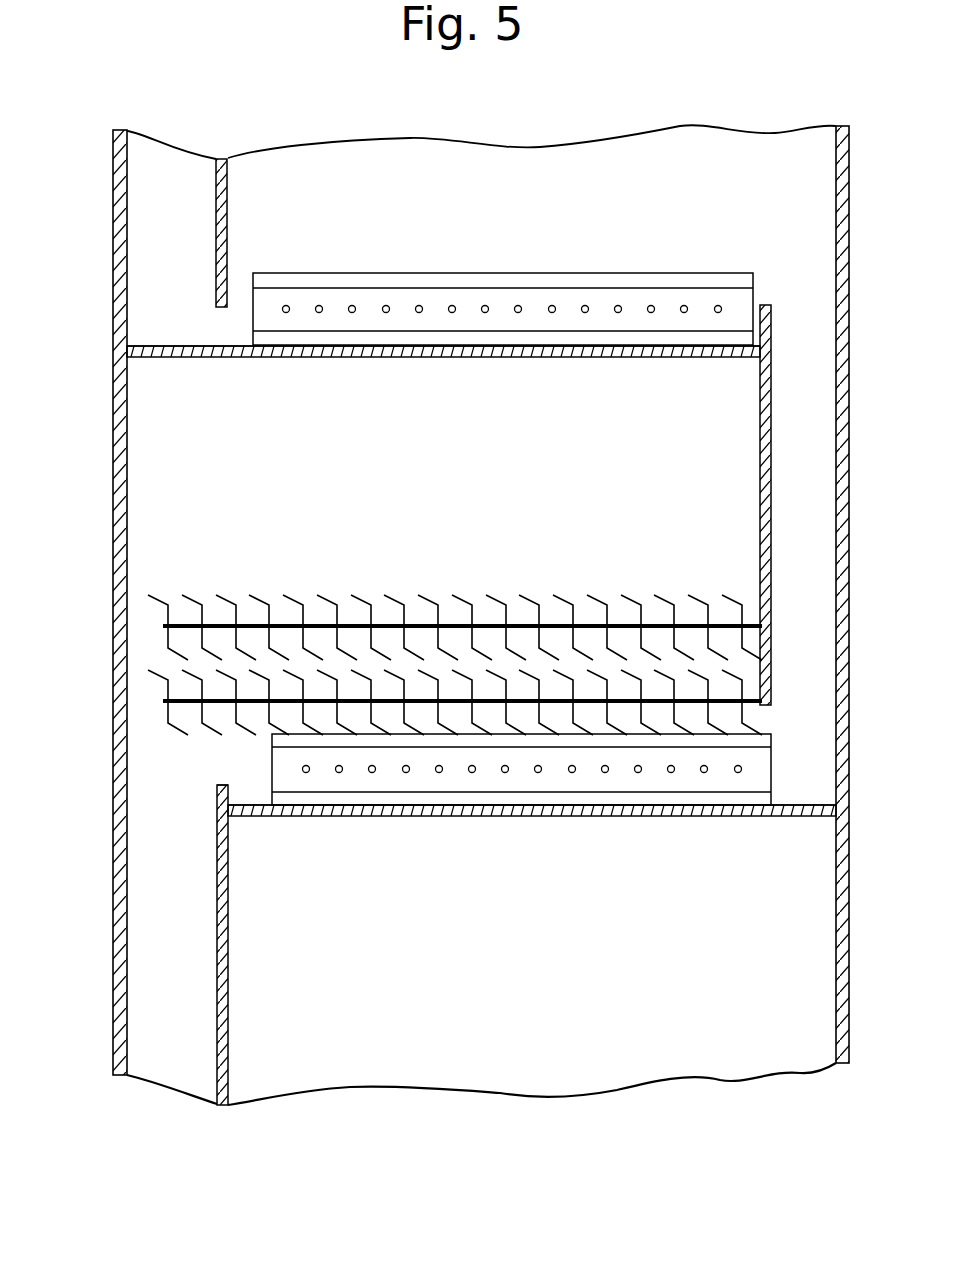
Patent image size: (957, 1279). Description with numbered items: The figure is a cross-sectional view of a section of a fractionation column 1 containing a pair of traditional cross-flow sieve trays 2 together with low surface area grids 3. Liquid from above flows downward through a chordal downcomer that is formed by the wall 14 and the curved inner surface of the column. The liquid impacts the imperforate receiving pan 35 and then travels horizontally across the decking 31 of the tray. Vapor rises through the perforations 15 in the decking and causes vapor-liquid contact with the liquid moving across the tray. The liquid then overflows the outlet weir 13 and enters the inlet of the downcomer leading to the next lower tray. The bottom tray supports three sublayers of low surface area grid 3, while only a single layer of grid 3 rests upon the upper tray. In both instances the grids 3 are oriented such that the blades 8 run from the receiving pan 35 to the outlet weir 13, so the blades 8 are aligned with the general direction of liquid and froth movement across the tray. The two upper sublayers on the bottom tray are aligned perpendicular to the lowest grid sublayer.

The fractionation column 1 is at (113, 273).
The cross-flow sieve tray 2 is at (247, 359).
The low surface area grid 3 is at (755, 296).
The blade 8 is at (575, 303).
The outlet weir 13 is at (218, 786).
The wall 14 is at (228, 216).
The perforation 15 is at (612, 350).
The decking 31 is at (521, 817).
The imperforate receiving pan 35 is at (178, 346).